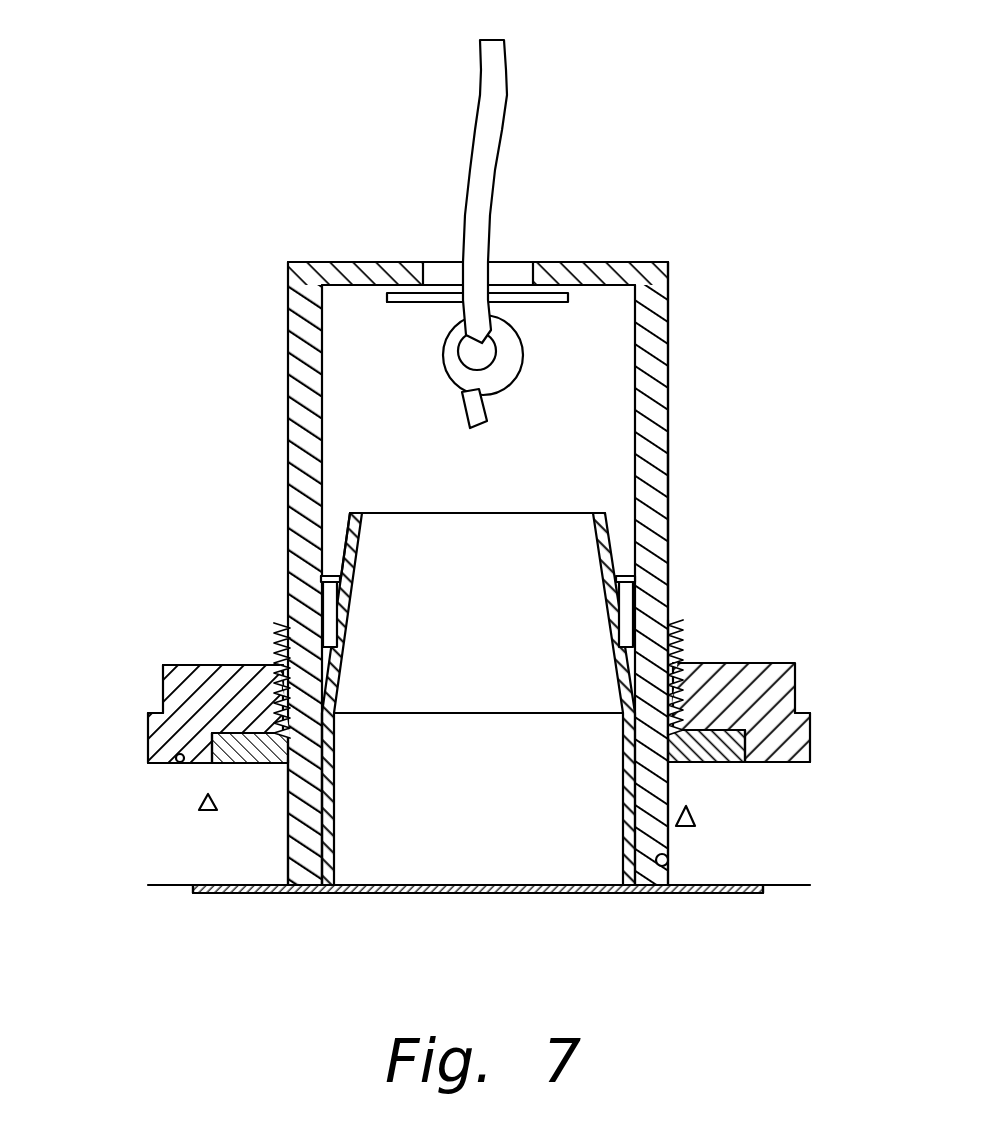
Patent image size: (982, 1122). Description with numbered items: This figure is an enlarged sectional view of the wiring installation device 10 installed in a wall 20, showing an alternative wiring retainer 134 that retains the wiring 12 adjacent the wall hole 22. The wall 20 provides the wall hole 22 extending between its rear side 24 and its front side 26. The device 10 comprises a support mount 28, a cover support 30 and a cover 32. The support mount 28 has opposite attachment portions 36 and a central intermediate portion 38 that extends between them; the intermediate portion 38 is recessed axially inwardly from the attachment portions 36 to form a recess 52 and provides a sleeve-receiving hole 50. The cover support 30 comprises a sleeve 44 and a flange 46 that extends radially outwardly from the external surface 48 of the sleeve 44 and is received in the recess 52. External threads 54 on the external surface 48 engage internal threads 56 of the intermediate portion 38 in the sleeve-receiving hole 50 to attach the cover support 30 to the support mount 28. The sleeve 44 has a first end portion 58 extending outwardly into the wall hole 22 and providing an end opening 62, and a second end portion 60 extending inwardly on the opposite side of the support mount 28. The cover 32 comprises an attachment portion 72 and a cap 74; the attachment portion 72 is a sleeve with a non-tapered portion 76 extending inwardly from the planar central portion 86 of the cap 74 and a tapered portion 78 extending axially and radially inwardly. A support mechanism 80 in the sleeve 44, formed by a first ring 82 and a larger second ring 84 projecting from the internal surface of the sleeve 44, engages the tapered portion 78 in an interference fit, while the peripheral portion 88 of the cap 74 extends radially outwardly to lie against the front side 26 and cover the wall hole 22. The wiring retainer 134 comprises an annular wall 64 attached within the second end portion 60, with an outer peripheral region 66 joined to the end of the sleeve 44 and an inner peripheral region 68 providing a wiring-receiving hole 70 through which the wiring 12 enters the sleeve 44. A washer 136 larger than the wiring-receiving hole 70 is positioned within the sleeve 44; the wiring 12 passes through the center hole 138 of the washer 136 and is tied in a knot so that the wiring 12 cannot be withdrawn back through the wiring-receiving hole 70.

The wiring installation device 10 is at (165, 222).
The wiring 12 is at (504, 90).
The wall 20 is at (696, 837).
The wall hole 22 is at (670, 863).
The rear side 24 is at (178, 764).
The front side 26 is at (165, 887).
The support mount 28 is at (195, 660).
The cover support 30 is at (672, 420).
The cover 32 is at (492, 894).
The attachment portions 36 is at (150, 712).
The intermediate portion 38 is at (248, 664).
The sleeve 44 is at (671, 543).
The flange 46 is at (724, 763).
The external surface 48 is at (669, 480).
The sleeve-receiving hole 50 is at (671, 665).
The recess 52 is at (240, 764).
The external threads 54 is at (671, 622).
The internal threads 56 is at (662, 690).
The first end portion 58 is at (289, 858).
The second end portion 60 is at (287, 368).
The end opening 62 is at (330, 883).
The annular wall 64 is at (345, 256).
The outer peripheral region 66 is at (335, 287).
The inner peripheral region 68 is at (388, 262).
The wiring-receiving hole 70 is at (524, 272).
The attachment portion 72 is at (341, 762).
The cap 74 is at (579, 896).
The non-tapered portion 76 is at (331, 820).
The tapered portion 78 is at (344, 570).
The support mechanism 80 is at (621, 605).
The first ring 82 is at (338, 625).
The second ring 84 is at (331, 576).
The central portion 86 is at (413, 894).
The peripheral portion 88 is at (257, 894).
The wiring retainer 134 is at (373, 291).
The washer 136 is at (573, 302).
The center hole 138 is at (490, 305).